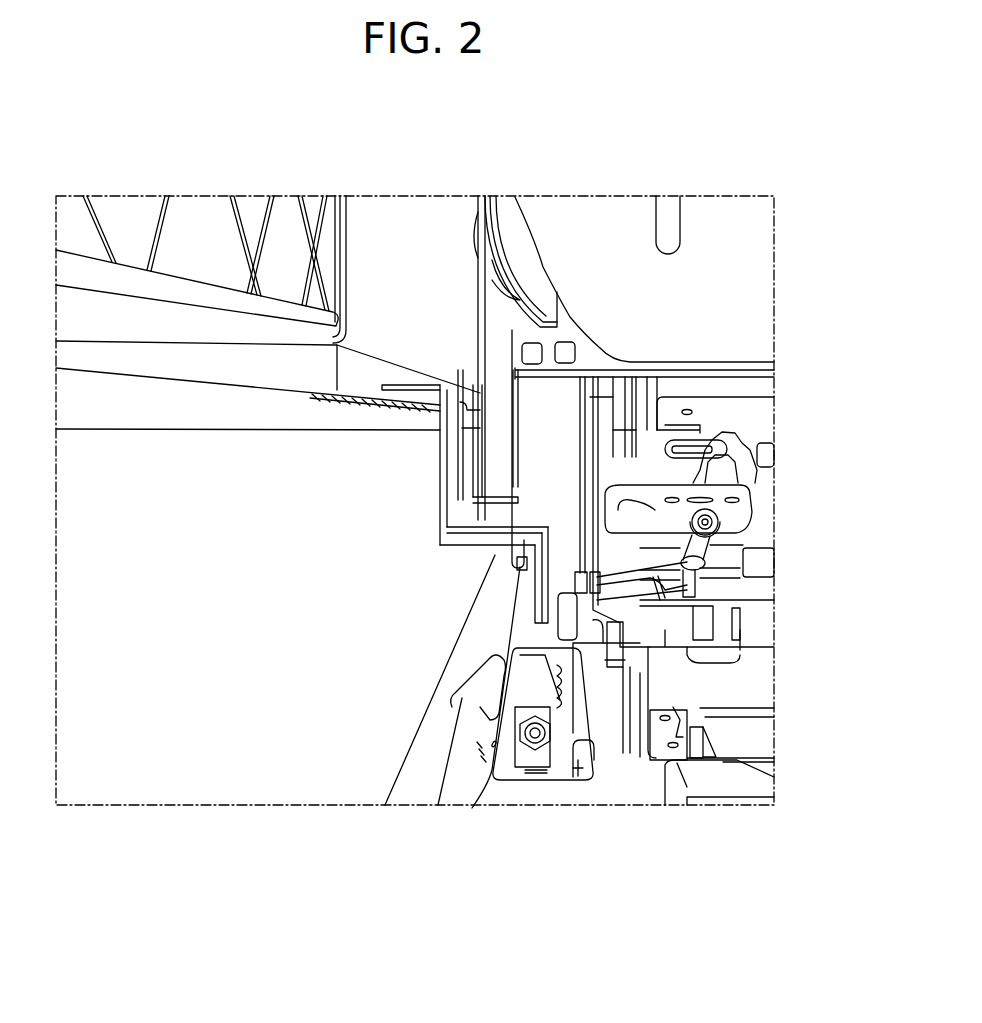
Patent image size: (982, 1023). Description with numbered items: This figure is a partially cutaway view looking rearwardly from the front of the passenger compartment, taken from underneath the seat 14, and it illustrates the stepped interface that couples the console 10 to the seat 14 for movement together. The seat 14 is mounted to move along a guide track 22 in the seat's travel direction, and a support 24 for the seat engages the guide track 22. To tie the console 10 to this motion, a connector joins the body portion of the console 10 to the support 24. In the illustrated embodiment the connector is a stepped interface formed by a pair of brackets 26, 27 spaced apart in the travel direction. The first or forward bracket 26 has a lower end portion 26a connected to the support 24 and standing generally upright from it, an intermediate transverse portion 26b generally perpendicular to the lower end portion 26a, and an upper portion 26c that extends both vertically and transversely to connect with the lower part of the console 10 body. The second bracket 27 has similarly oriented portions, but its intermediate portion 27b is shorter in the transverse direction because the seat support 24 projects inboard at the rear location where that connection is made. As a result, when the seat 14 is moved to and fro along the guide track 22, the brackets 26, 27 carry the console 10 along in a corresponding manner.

The console 10 is at (385, 194).
The seat 14 is at (768, 237).
The guide track 22 is at (572, 787).
The support 24 is at (472, 808).
The first bracket 26 is at (427, 460).
The lower end portion 26a is at (528, 590).
The intermediate transverse portion 26b is at (476, 545).
The upper portion 26c is at (427, 480).
The second bracket 27 is at (442, 401).
The intermediate portion 27b is at (500, 495).